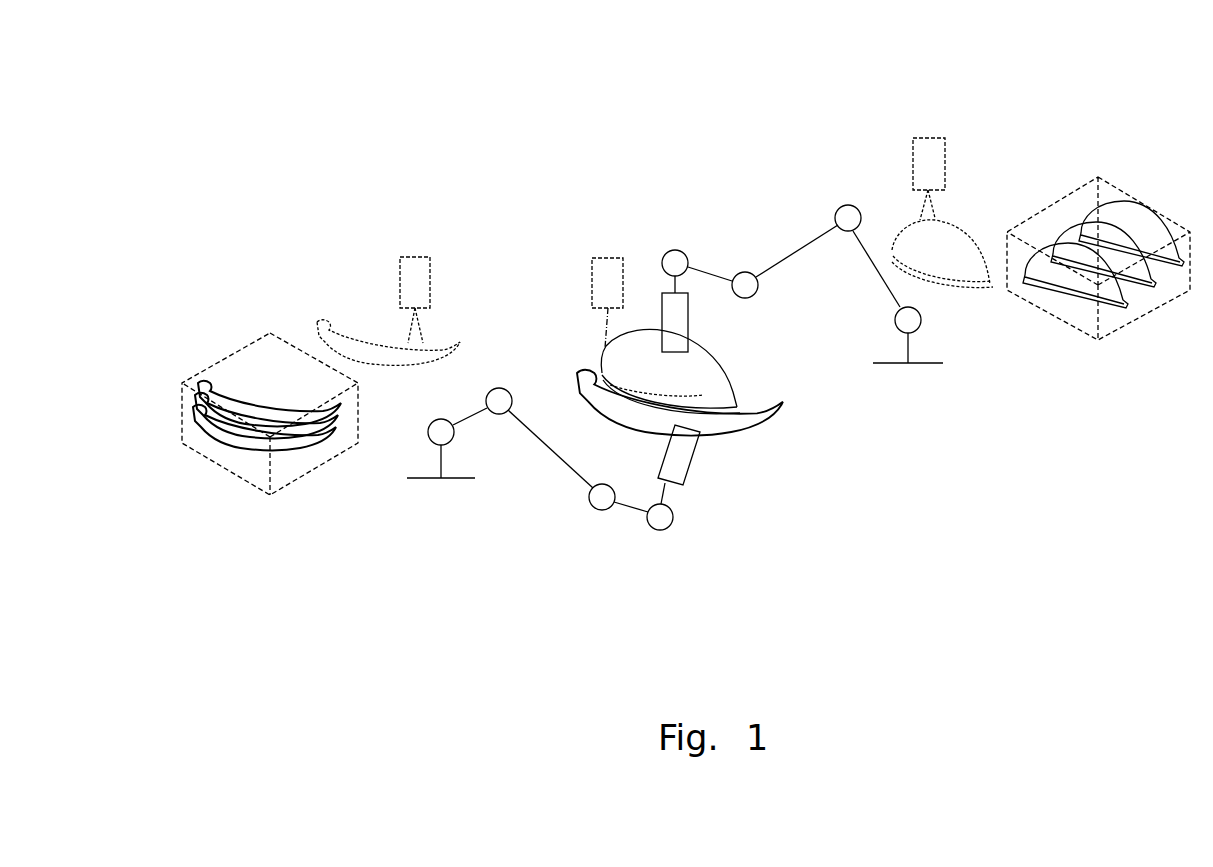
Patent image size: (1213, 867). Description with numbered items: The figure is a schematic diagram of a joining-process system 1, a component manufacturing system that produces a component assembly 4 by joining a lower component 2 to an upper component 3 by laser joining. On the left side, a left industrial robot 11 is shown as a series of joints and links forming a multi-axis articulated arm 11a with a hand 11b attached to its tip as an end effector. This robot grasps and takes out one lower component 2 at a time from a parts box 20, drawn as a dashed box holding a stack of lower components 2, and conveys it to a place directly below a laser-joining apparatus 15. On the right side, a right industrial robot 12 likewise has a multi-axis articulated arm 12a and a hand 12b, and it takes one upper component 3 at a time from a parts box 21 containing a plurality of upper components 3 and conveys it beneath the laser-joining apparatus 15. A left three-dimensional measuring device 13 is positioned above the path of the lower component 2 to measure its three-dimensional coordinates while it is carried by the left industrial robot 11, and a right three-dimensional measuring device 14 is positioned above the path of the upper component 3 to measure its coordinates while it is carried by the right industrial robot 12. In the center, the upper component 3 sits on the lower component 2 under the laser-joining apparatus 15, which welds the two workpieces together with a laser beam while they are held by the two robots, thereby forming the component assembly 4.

The joining-process system 1 is at (511, 85).
The lower component 2 is at (337, 408).
The upper component 3 is at (717, 388).
The component assembly 4 is at (558, 341).
The left industrial robot 11 is at (588, 498).
The multi-axis articulated arm 11a is at (572, 477).
The hand 11b is at (678, 482).
The right industrial robot 12 is at (802, 239).
The multi-axis articulated arm 12a is at (770, 251).
The hand 12b is at (680, 317).
The left three-dimensional measuring device 13 is at (414, 272).
The right three-dimensional measuring device 14 is at (930, 155).
The laser-joining apparatus 15 is at (610, 270).
The parts box 20 is at (242, 480).
The parts box 21 is at (1053, 322).